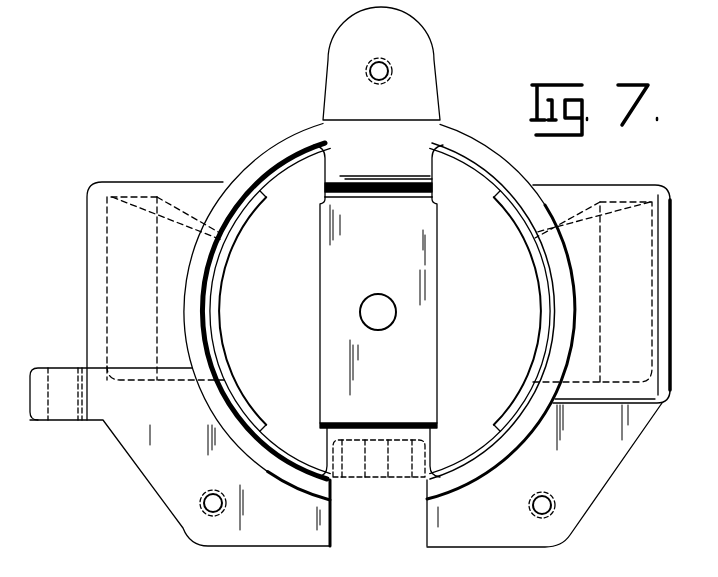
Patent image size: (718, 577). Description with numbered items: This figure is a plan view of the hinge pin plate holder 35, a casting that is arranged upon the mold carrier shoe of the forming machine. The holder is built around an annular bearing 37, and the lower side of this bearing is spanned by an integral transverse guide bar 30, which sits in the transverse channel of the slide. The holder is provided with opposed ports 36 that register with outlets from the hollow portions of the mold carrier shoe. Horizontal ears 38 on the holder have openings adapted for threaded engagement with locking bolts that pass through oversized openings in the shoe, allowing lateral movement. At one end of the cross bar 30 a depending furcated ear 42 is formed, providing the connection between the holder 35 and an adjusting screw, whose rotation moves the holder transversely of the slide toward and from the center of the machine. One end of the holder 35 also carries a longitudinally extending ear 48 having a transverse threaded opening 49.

The transverse guide bar 30 is at (406, 395).
The hinge pin plate holder 35 is at (669, 414).
The opposed ports 36 is at (108, 291).
The annular bearing 37 is at (468, 143).
The horizontal ears 38 is at (425, 68).
The depending furcated ear 42 is at (400, 478).
The longitudinally extending ear 48 is at (117, 372).
The transverse threaded opening 49 is at (60, 378).